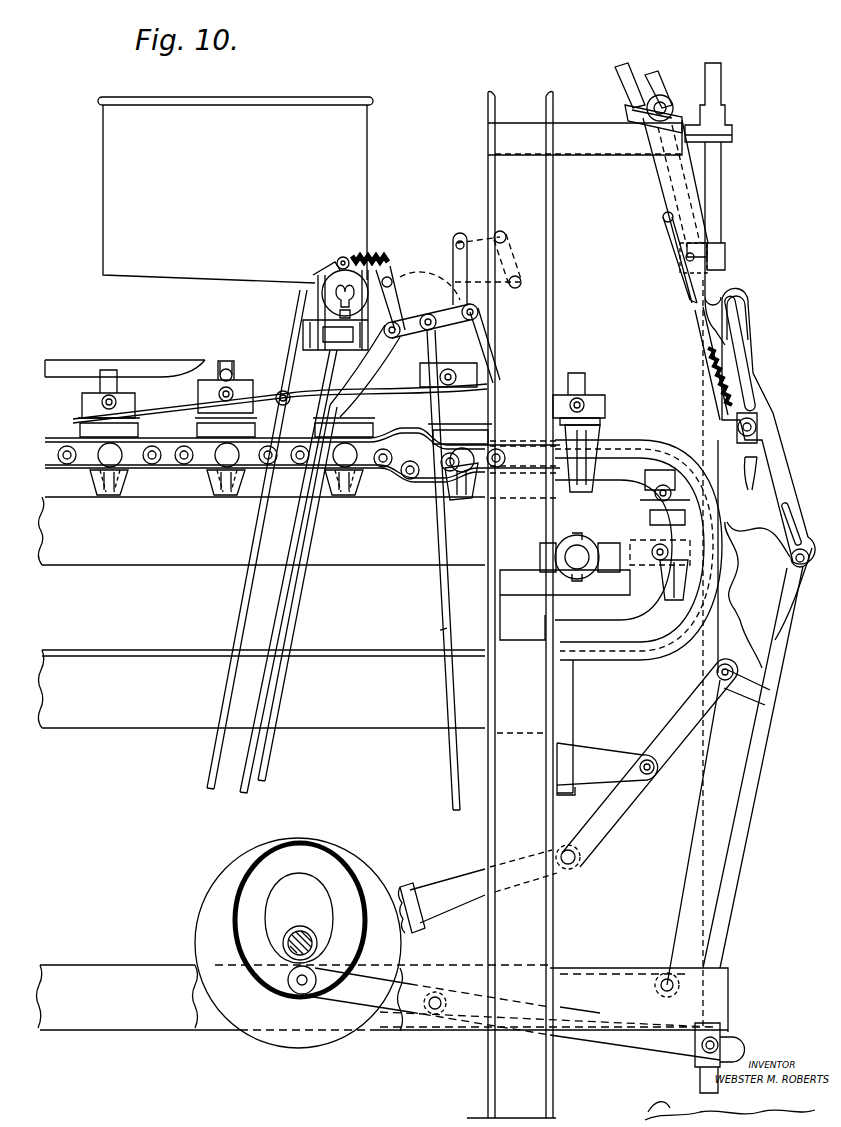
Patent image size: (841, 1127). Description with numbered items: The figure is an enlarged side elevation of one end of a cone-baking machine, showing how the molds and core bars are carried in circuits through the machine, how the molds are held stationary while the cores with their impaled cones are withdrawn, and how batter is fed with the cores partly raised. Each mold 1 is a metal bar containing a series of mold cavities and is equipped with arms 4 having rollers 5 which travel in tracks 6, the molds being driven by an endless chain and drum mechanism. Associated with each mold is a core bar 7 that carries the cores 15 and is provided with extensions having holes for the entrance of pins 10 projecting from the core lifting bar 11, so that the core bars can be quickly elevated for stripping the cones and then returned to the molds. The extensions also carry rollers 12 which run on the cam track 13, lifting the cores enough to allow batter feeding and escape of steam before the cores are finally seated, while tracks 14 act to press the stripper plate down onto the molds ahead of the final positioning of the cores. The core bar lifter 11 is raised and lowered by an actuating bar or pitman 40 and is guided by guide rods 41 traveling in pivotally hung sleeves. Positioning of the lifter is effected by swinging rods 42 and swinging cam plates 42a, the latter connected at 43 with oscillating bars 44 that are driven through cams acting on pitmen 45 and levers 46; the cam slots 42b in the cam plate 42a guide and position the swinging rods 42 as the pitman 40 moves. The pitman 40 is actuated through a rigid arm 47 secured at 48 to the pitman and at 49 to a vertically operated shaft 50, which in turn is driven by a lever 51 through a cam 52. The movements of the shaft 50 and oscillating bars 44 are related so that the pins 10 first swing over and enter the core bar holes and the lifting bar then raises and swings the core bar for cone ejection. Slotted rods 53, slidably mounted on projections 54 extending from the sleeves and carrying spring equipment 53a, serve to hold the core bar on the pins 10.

The mold 1 is at (98, 488).
The arms 4 is at (128, 463).
The rollers 5 is at (172, 462).
The tracks 6 is at (62, 437).
The core bar 7 is at (133, 397).
The pins 10 is at (748, 485).
The core lifting bar 11 is at (760, 433).
The rollers 12 is at (228, 372).
The cam track 13 is at (282, 391).
The tracks 14 is at (80, 365).
The cores 15 is at (352, 410).
The actuating bar or pitman 40 is at (625, 88).
The guide rods 41 is at (732, 333).
The swinging rods 42 is at (770, 482).
The swinging cam plates 42a is at (755, 400).
The cam slots 42b is at (748, 302).
The connection 43 is at (778, 568).
The oscillating bars 44 is at (735, 765).
The pitmen 45 is at (447, 890).
The levers 46 is at (613, 815).
The rigid arm 47 is at (727, 253).
The securing point 48 is at (683, 258).
The securing point 49 is at (707, 245).
The vertically operated shaft 50 is at (718, 207).
The lever 51 is at (634, 1043).
The cam 52 is at (238, 920).
The slotted rods 53 is at (668, 236).
The spring equipment 53a is at (702, 375).
The projections 54 is at (663, 217).